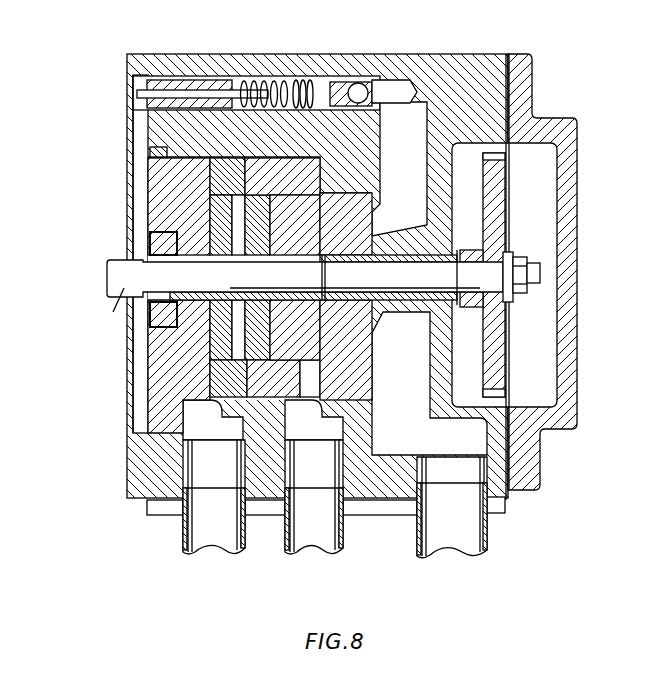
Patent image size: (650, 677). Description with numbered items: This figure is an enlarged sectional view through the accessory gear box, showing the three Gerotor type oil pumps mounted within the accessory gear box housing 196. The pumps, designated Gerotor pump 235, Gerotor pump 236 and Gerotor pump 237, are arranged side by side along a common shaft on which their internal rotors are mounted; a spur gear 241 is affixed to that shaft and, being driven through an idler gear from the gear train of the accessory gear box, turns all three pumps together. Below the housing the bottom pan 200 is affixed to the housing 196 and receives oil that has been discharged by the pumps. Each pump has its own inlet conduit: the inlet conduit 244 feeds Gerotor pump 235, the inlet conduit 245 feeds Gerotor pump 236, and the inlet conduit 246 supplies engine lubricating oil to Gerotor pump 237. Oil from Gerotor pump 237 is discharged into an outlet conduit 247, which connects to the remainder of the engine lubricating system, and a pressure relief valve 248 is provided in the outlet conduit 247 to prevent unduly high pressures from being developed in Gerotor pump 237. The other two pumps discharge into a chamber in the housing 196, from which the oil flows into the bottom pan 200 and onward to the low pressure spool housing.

The accessory gear box housing 196 is at (168, 63).
The bottom pan 200 is at (578, 193).
The Gerotor pump 235 is at (218, 300).
The Gerotor pump 236 is at (262, 255).
The Gerotor pump 237 is at (336, 250).
The spur gear 241 is at (495, 374).
The inlet conduit 244 is at (183, 538).
The inlet conduit 245 is at (345, 540).
The inlet conduit 246 is at (490, 536).
The outlet conduit 247 is at (386, 140).
The pressure relief valve 248 is at (360, 82).